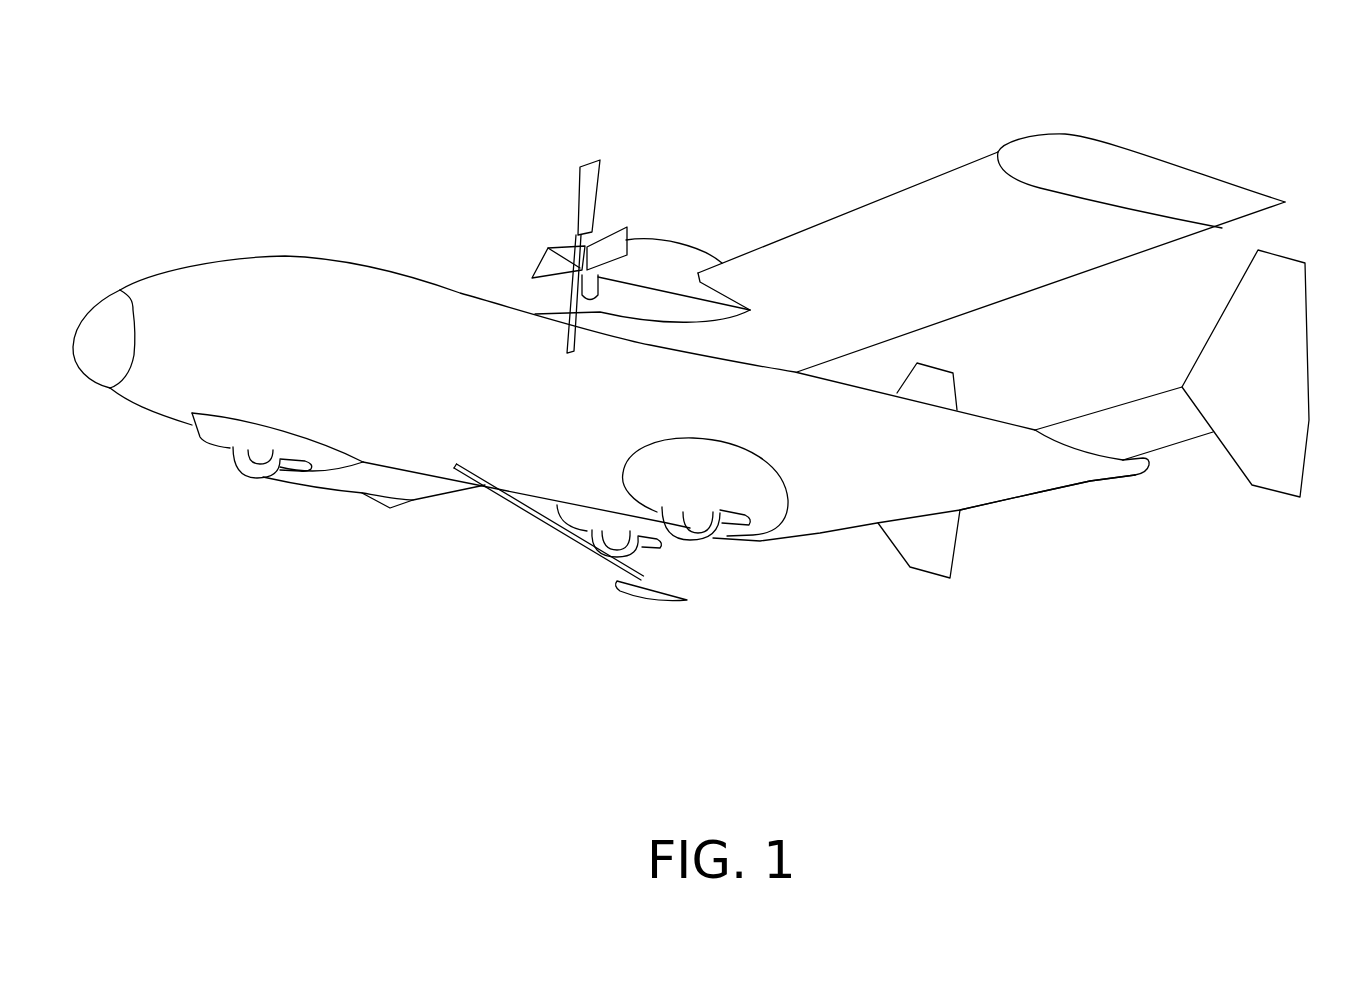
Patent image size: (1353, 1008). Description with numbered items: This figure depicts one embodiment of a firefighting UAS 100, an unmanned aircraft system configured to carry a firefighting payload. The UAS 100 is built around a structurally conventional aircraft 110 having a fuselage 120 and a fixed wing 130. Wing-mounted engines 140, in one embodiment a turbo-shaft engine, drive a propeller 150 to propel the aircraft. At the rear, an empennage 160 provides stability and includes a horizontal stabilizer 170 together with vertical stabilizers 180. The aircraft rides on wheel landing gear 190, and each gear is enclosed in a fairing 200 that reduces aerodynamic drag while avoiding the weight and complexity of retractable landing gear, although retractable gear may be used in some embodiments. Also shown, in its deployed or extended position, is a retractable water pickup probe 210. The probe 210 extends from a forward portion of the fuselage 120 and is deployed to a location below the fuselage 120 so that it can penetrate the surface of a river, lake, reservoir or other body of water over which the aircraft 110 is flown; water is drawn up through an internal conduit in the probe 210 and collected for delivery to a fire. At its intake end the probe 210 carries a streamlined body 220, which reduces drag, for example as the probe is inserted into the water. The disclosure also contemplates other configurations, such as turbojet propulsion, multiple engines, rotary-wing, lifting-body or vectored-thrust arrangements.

The firefighting UAS 100 is at (400, 142).
The aircraft 110 is at (212, 227).
The fuselage 120 is at (377, 272).
The fixed wing 130 is at (919, 181).
The wing-mounted engine 140 is at (677, 245).
The propeller 150 is at (579, 172).
The empennage 160 is at (1010, 491).
The horizontal stabilizer 170 is at (1123, 395).
The vertical stabilizer 180 is at (1262, 488).
The wheel landing gear 190 is at (262, 482).
The fairing 200 is at (207, 450).
The retractable water pickup probe 210 is at (523, 528).
The streamlined body 220 is at (657, 602).